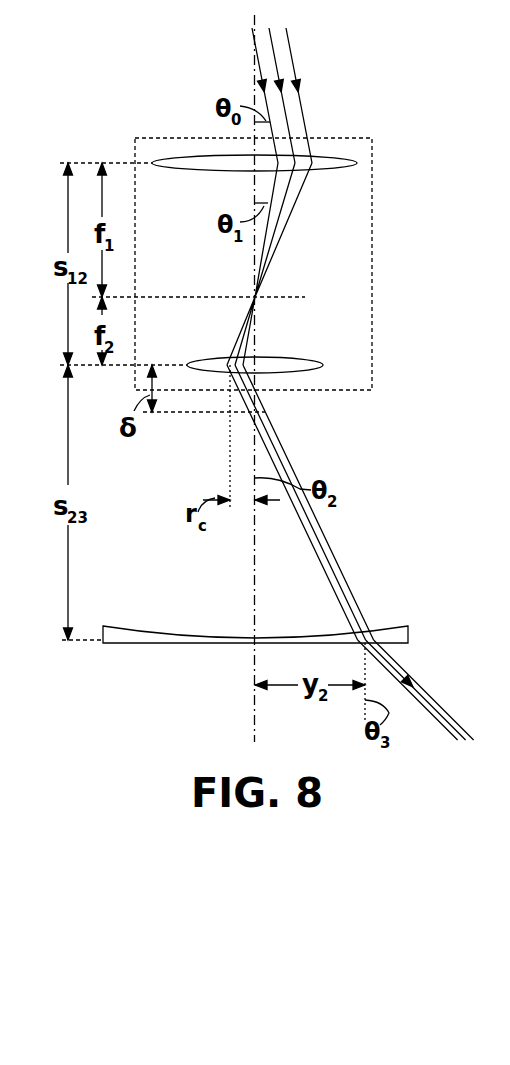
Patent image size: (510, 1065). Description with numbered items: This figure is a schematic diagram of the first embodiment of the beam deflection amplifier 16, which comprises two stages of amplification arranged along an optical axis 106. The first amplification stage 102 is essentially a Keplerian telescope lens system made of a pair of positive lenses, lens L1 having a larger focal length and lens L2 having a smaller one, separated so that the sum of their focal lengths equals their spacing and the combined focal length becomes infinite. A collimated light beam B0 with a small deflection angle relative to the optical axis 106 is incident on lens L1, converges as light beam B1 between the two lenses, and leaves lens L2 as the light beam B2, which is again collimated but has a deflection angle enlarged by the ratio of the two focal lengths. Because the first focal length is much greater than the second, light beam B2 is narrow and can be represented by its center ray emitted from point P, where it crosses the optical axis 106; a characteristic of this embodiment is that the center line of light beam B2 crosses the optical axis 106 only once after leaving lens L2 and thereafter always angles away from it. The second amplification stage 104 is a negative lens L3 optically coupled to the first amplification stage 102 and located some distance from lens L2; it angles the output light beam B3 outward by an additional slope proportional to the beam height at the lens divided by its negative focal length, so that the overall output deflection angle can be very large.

The beam deflection amplifier 16 is at (118, 113).
The first amplification stage 102 is at (373, 248).
The second amplification stage 104 is at (156, 621).
The optical axis 106 is at (254, 598).
The lens L1 is at (358, 163).
The lens L2 is at (323, 365).
The lens L3 is at (408, 627).
The light beam B0 is at (295, 73).
The light beam B1 is at (297, 200).
The light beam B2 is at (337, 565).
The light beam B3 is at (451, 716).
The point P is at (253, 412).